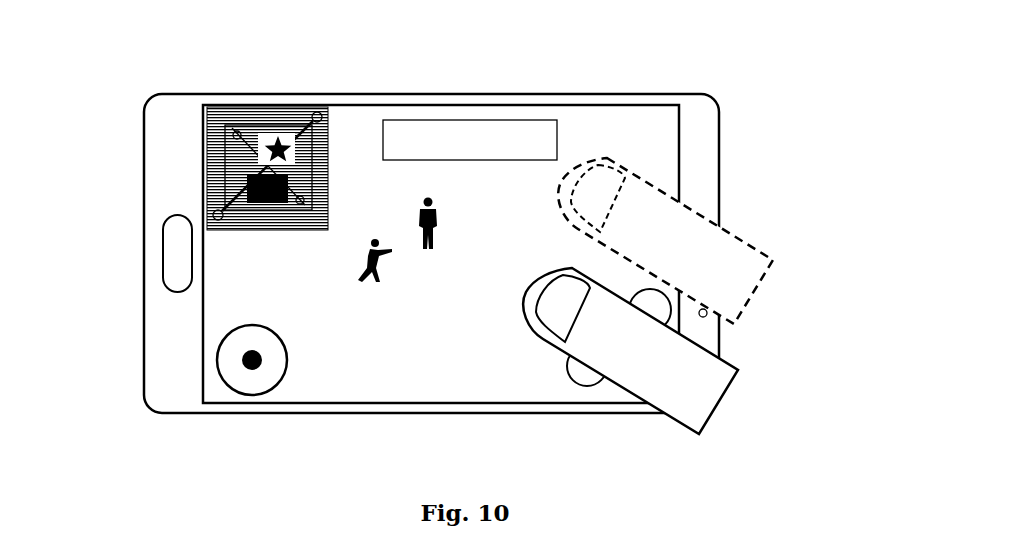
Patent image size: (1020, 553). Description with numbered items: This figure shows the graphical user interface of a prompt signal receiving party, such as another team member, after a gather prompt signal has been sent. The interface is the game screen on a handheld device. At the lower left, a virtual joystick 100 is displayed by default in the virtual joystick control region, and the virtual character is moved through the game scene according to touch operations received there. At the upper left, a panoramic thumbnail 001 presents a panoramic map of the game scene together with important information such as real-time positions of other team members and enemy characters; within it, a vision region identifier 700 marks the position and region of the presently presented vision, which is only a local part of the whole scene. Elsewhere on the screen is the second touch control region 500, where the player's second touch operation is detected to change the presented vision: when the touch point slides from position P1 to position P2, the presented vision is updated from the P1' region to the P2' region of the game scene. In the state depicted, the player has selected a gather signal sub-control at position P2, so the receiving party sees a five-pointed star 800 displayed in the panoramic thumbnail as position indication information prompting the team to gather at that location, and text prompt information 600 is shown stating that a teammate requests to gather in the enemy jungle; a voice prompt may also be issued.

The virtual joystick 100 is at (247, 393).
The vision region identifier 700 is at (207, 170).
The five-pointed star 800 is at (207, 107).
The panoramic thumbnail 001 is at (302, 102).
The P1' region P1' is at (194, 140).
The P2' region P2' is at (357, 77).
The text prompt information 600 is at (507, 120).
The position P2 is at (701, 239).
The second touch control region 500 is at (691, 369).
The position P1 is at (563, 372).